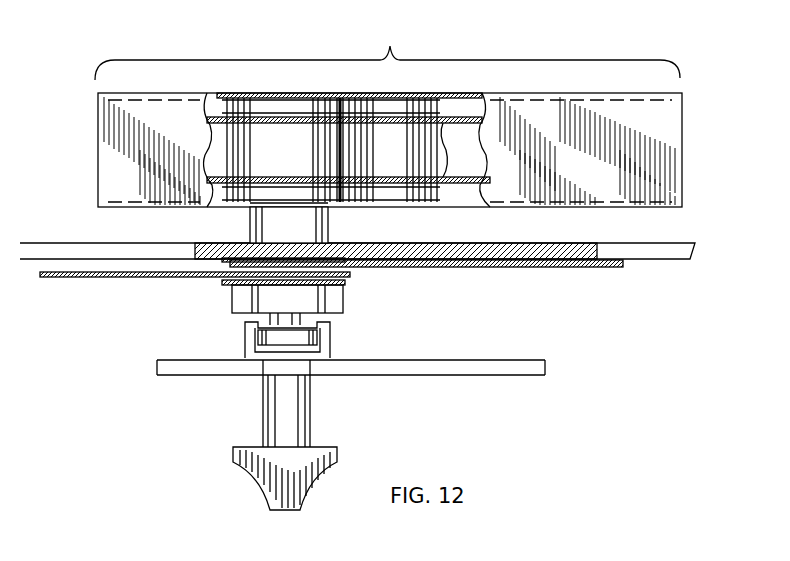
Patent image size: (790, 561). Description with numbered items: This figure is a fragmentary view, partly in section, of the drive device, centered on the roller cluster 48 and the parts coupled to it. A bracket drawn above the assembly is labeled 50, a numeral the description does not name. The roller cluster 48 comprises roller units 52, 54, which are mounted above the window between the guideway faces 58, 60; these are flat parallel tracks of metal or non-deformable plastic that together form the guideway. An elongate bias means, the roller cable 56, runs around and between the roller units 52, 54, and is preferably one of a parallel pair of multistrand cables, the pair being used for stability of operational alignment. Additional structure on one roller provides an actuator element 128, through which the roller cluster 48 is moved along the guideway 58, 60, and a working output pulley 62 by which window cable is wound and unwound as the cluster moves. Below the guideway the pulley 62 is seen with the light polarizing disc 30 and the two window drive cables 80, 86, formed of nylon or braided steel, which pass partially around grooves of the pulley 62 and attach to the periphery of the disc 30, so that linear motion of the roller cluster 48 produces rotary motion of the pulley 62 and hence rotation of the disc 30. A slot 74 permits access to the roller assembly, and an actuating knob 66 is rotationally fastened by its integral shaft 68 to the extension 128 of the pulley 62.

The polarizer disc 30 is at (650, 262).
The roller cluster 48 is at (309, 90).
The support assembly 50 is at (387, 51).
The roller unit 52 is at (284, 100).
The roller unit 54 is at (400, 100).
The roller cable 56 is at (458, 150).
The guideway face 58 is at (100, 162).
The guideway face 60 is at (470, 190).
The pulley 62 is at (230, 285).
The actuating knob 66 is at (245, 468).
The integral shaft 68 is at (310, 400).
The slot 74 is at (237, 374).
The first drive cable 80 is at (108, 278).
The second window cable 86 is at (537, 268).
The actuator element 128 is at (322, 335).